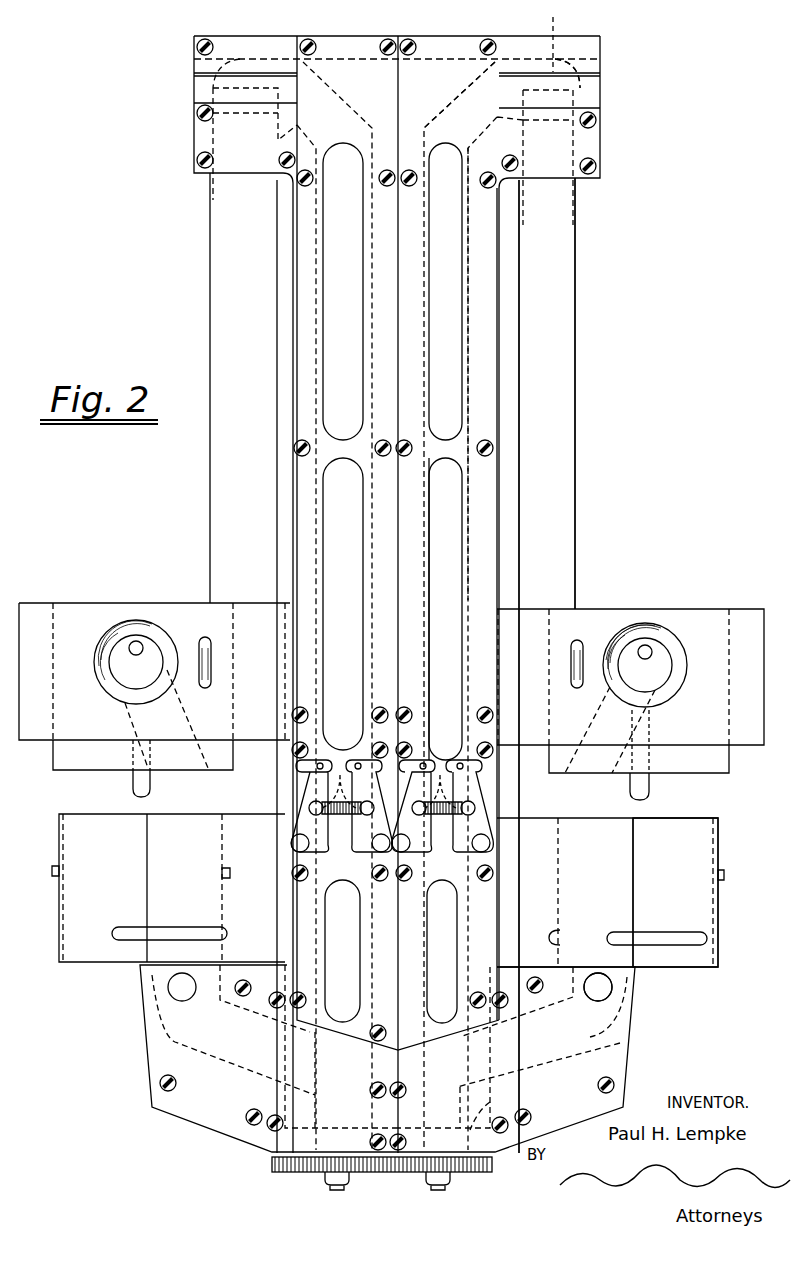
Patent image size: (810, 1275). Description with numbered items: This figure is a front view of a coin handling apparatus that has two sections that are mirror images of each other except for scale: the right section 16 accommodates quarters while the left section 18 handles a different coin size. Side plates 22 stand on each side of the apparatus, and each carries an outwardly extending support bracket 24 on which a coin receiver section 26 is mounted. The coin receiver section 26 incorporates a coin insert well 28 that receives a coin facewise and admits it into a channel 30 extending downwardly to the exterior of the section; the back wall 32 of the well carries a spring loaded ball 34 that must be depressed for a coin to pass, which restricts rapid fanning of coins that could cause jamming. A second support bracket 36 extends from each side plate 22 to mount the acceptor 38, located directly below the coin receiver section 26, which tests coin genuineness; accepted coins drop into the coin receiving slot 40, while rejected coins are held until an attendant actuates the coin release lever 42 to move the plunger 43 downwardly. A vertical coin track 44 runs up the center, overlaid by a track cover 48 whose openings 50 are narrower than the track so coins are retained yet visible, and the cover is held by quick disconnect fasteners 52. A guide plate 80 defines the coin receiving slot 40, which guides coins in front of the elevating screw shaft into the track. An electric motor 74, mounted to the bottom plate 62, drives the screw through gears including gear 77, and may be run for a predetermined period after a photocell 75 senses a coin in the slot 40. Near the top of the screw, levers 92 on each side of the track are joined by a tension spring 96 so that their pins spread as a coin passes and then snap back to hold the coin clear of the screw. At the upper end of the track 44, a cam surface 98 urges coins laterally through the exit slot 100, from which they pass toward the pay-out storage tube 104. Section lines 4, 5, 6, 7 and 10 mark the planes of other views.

The section line 4- 4 is at (443, 630).
The section line 5- 5 is at (485, 513).
The section line 6- 6 is at (480, 922).
The section line 7- 7 is at (480, 1052).
The section line 10- 10 is at (552, 17).
The right section 16 is at (634, 268).
The left section 18 is at (128, 282).
The side plate 22 is at (500, 793).
The support bracket 24 is at (765, 628).
The coin receiver section 26 is at (733, 762).
The coin insert well 28 is at (662, 697).
The channel 30 is at (590, 730).
The back wall 32 is at (652, 680).
The spring loaded ball 34 is at (653, 652).
The second support bracket 36 is at (635, 842).
The acceptor 38 is at (722, 888).
The coin receiving slot 40 is at (578, 1032).
The coin release lever 42 is at (570, 668).
The plunger 43 is at (650, 788).
The coin track 44 is at (478, 278).
The track cover 48 is at (490, 243).
The openings 50 is at (452, 655).
The quick disconnect fasteners 52 is at (407, 170).
The bottom plate 62 is at (500, 1102).
The electric motor 74 is at (458, 764).
The photocell 75 is at (612, 994).
The gear 77 is at (493, 1165).
The guide plate 80 is at (566, 1084).
The lever 92 is at (470, 826).
The tension spring 96 is at (389, 791).
The cam surface 98 is at (458, 124).
The exit slot 100 is at (505, 92).
The pay-out storage tube 104 is at (576, 370).